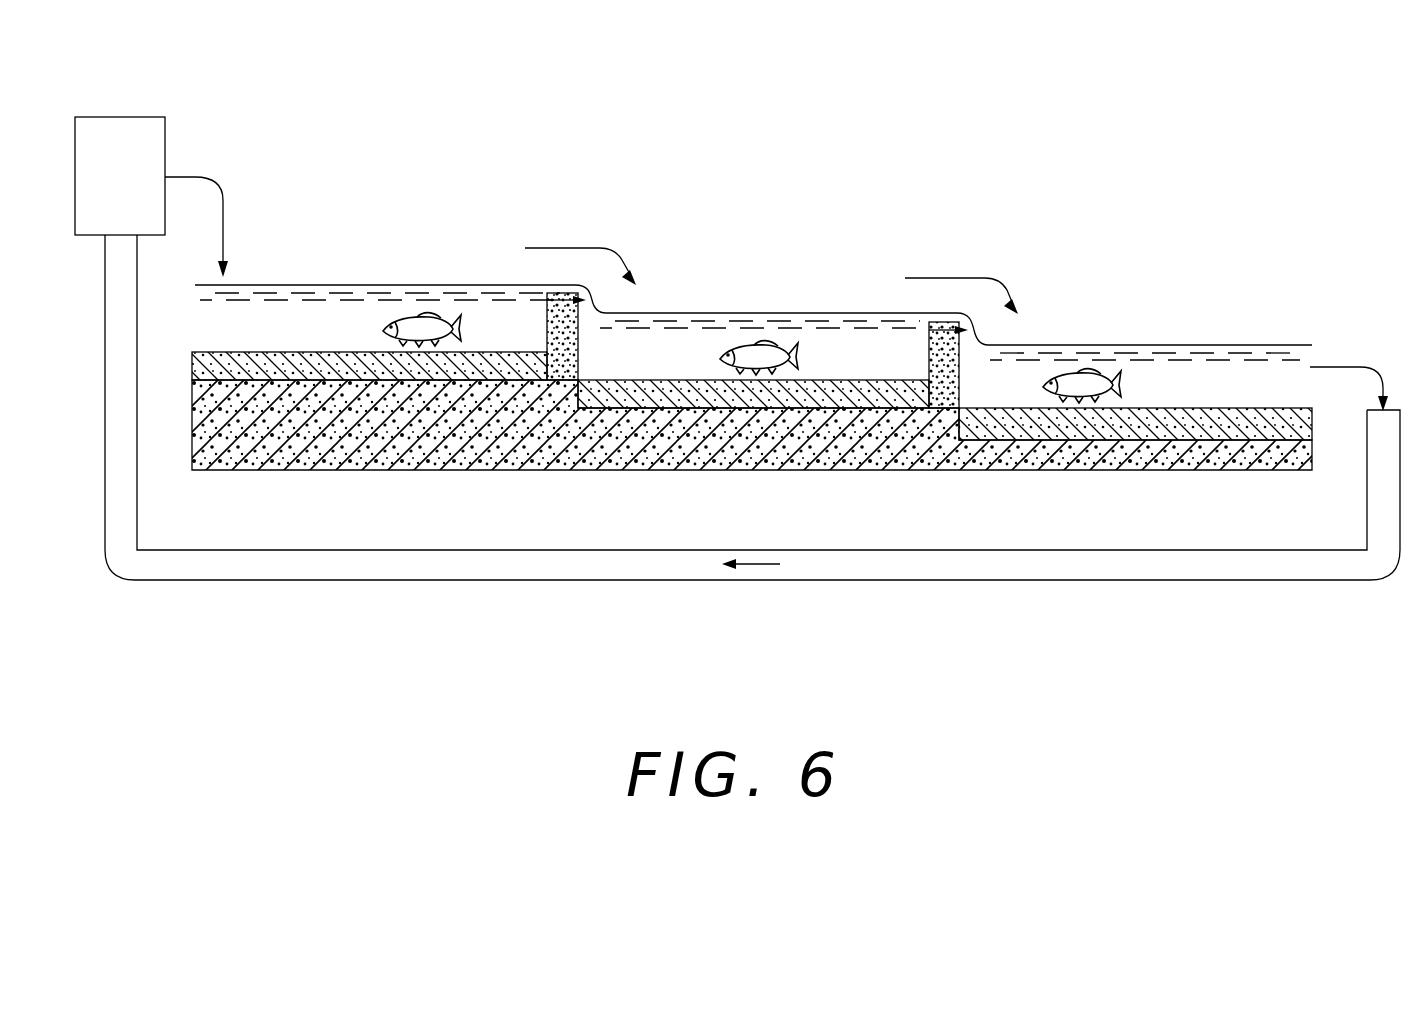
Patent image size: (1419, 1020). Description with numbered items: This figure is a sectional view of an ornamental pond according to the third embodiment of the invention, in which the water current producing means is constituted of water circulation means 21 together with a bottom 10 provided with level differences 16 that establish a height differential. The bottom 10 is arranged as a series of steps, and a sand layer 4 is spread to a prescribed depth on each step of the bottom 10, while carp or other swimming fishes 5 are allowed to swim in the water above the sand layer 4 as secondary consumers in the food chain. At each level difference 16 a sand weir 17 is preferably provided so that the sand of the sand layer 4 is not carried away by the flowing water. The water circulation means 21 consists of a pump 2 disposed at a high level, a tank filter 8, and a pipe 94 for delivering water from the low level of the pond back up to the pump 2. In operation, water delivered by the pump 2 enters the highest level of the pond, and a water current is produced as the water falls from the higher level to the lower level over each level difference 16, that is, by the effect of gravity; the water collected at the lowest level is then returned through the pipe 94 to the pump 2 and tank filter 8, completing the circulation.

The underwater pump 2 is at (124, 169).
The tank filter 8 is at (189, 161).
The sand layer 4 is at (268, 468).
The swimming fishes 5 is at (425, 315).
The bottom 10 is at (425, 480).
The level difference 16 is at (548, 383).
The sand weir 17 is at (582, 348).
The water circulation means 21 is at (752, 452).
The pipe 94 is at (858, 566).